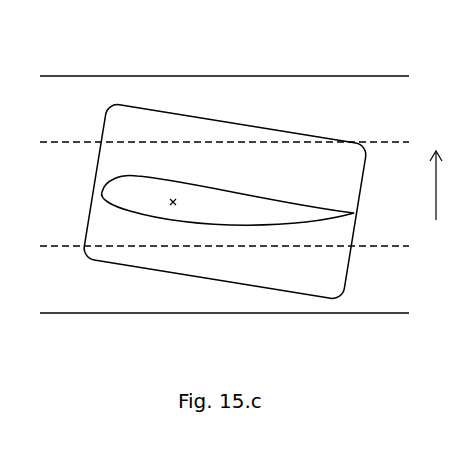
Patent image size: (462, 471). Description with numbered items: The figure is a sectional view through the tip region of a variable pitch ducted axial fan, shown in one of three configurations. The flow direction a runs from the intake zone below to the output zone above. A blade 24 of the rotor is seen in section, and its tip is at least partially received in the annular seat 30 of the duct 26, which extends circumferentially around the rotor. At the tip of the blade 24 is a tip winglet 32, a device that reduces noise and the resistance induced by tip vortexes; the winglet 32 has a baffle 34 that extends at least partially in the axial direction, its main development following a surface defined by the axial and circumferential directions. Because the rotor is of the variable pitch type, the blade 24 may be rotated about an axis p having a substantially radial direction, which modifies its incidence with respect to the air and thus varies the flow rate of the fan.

The blade 24 is at (216, 193).
The duct 26 is at (110, 344).
The annular seat 30 is at (370, 108).
The tip winglet 32 is at (122, 158).
The baffle 34 is at (342, 192).
The axis p is at (168, 203).
The flow direction a is at (444, 185).